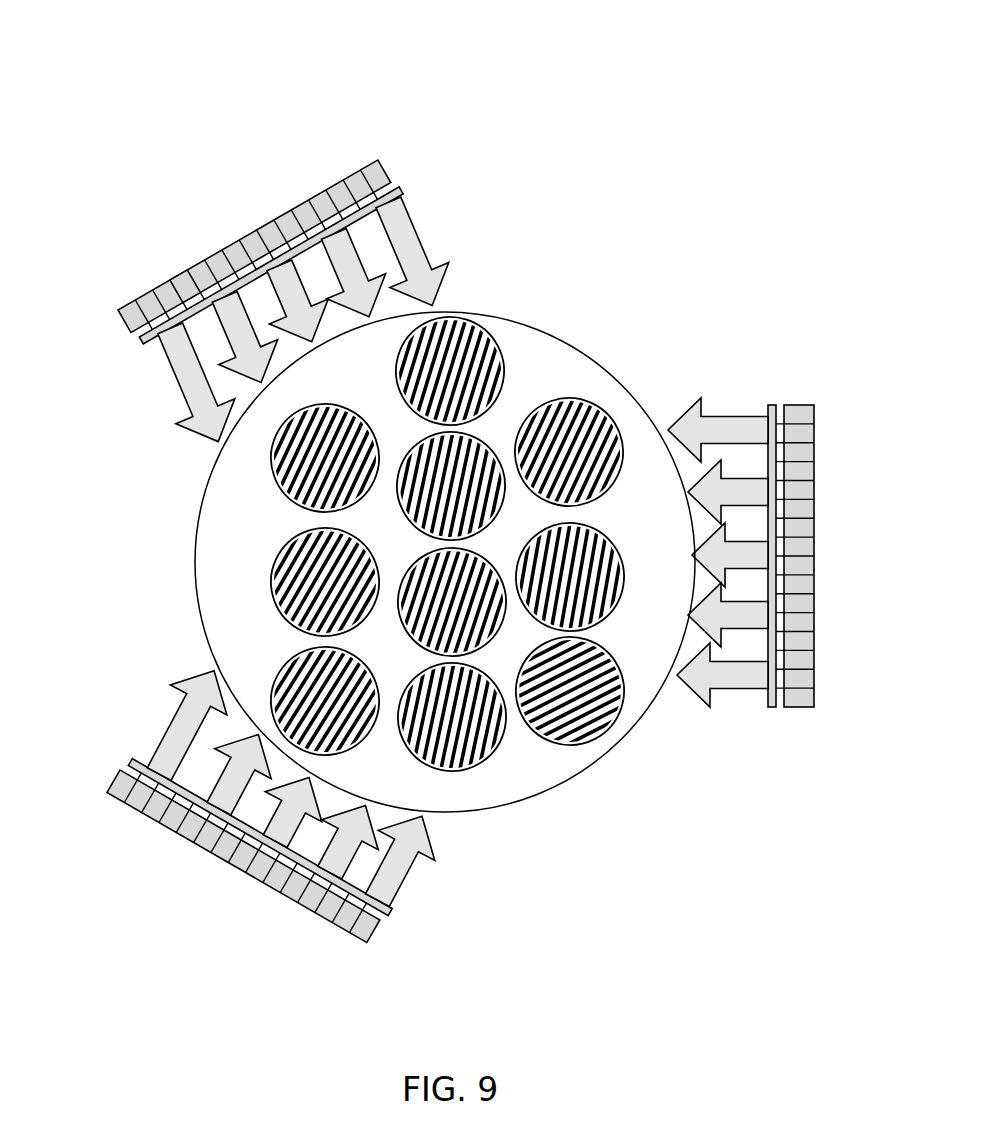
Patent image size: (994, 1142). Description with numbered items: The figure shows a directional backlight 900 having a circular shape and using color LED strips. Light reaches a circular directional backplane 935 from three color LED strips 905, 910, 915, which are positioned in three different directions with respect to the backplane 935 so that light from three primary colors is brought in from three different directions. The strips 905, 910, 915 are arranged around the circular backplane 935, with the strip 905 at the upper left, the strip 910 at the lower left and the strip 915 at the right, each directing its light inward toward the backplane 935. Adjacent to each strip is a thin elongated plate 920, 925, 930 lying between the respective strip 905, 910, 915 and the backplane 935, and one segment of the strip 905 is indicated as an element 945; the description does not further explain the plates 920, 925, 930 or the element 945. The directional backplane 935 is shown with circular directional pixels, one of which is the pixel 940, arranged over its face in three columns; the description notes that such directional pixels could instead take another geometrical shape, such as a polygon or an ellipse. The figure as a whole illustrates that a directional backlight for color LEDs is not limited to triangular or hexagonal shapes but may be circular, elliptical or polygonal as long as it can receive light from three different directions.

The processing system 900 is at (454, 60).
The color LED strip 905 is at (252, 230).
The color LED strip 910 is at (112, 793).
The color LED strip 915 is at (813, 425).
The first heat shield plate 920 is at (400, 190).
The second heat shield plate 925 is at (133, 762).
The third heat shield plate 930 is at (772, 405).
The circular directional backplane 935 is at (508, 318).
The pixel 940 is at (585, 403).
The heating element 945 is at (177, 281).